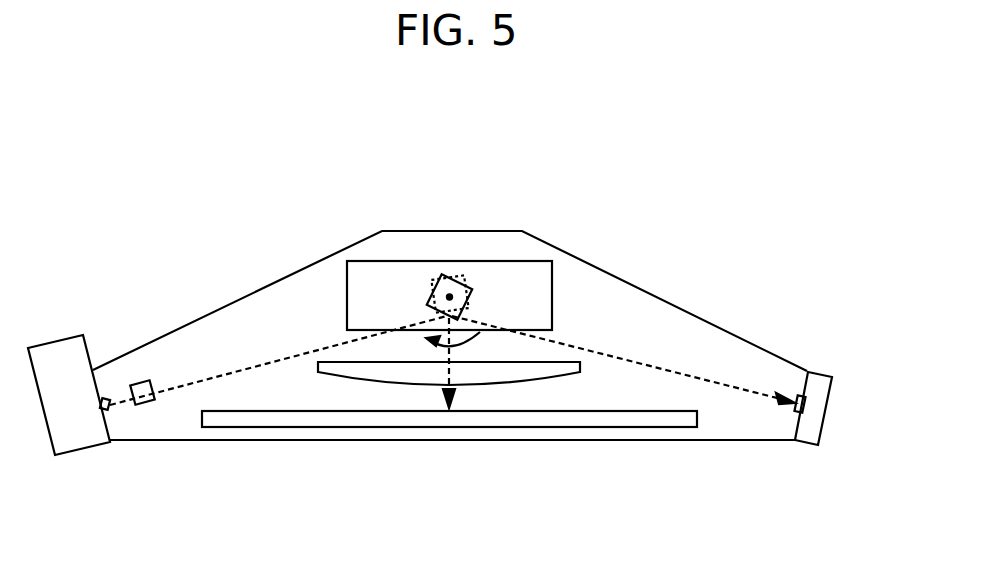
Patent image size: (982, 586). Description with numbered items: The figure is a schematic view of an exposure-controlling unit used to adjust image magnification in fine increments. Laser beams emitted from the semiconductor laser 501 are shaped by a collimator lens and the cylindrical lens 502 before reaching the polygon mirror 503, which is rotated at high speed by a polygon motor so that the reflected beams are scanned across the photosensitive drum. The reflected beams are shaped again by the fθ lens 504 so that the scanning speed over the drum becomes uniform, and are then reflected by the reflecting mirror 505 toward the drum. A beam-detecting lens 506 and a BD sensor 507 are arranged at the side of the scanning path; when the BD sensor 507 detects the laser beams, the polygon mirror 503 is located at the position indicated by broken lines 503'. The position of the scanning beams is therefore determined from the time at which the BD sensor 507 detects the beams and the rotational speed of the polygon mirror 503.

The semiconductor laser 501 is at (70, 337).
The cylindrical lens 502 is at (138, 382).
The polygon mirror 503 is at (449, 249).
The polygon mirror position indicated by broken lines 503' is at (496, 251).
The fθ lens 504 is at (338, 372).
The reflecting mirror 505 is at (672, 416).
The beam-detecting (BD) lens 506 is at (799, 395).
The BD sensor 507 is at (818, 404).